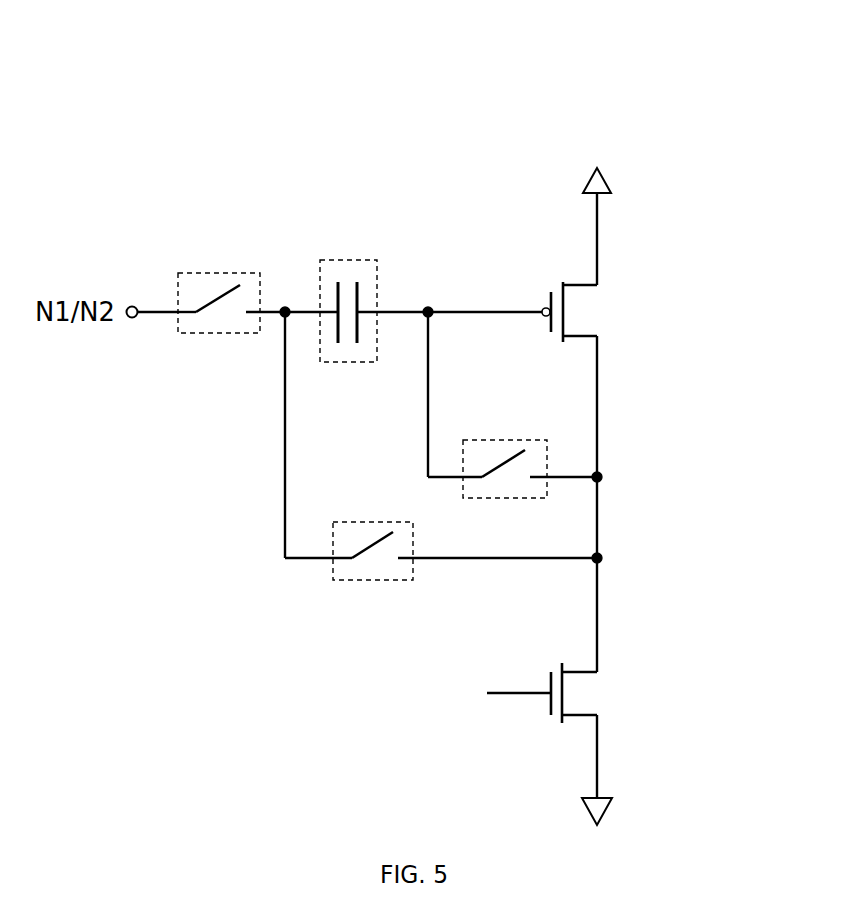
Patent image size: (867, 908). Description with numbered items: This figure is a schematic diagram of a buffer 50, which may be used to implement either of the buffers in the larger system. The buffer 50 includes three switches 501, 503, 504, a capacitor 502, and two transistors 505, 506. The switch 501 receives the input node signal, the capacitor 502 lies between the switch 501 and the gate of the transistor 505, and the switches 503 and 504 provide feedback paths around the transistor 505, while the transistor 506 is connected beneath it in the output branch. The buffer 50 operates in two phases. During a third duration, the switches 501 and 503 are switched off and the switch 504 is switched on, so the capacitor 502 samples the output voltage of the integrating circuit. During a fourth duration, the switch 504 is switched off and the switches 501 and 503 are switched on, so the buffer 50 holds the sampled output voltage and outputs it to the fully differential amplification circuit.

The buffer 50 is at (652, 110).
The switch 501 is at (217, 273).
The capacitor 502 is at (348, 260).
The switch 503 is at (503, 440).
The switch 504 is at (372, 580).
The transistor 505 is at (587, 312).
The transistor 506 is at (558, 693).